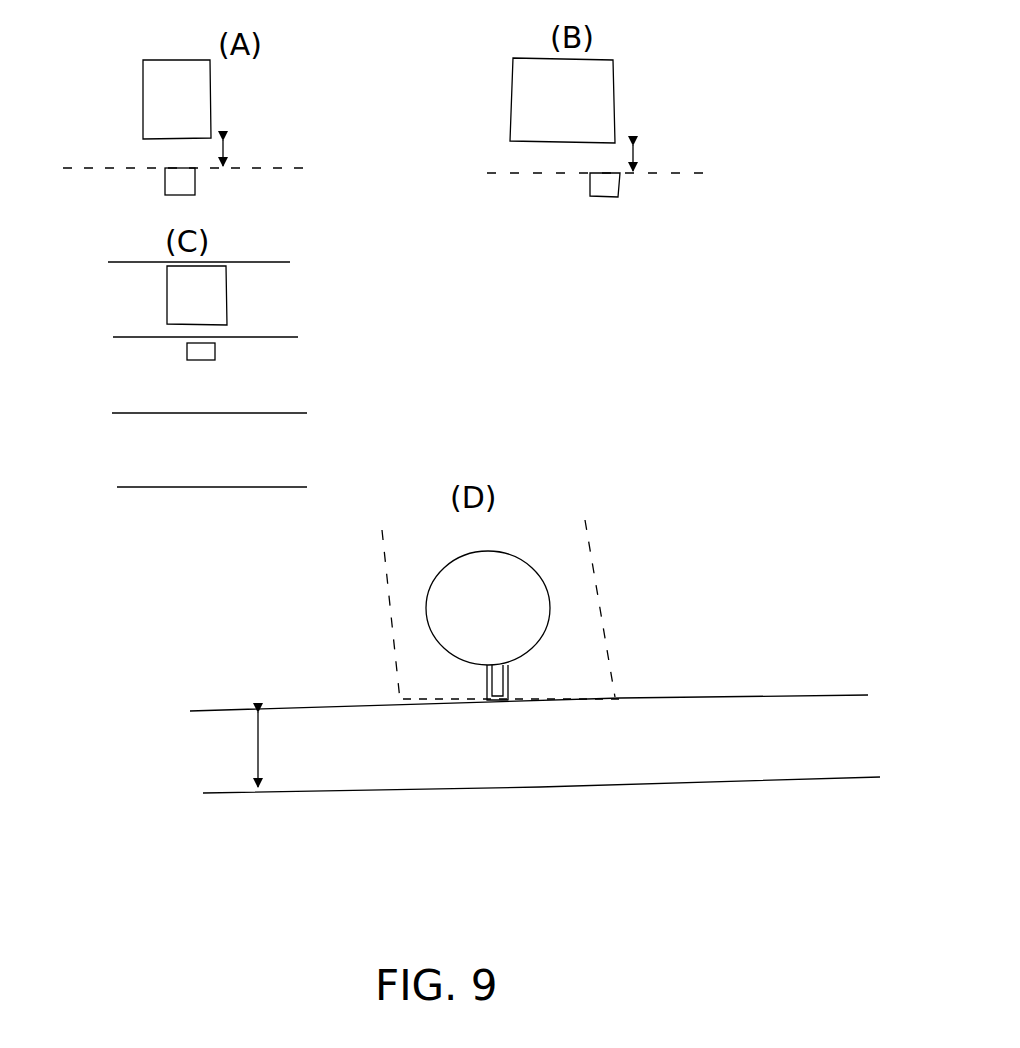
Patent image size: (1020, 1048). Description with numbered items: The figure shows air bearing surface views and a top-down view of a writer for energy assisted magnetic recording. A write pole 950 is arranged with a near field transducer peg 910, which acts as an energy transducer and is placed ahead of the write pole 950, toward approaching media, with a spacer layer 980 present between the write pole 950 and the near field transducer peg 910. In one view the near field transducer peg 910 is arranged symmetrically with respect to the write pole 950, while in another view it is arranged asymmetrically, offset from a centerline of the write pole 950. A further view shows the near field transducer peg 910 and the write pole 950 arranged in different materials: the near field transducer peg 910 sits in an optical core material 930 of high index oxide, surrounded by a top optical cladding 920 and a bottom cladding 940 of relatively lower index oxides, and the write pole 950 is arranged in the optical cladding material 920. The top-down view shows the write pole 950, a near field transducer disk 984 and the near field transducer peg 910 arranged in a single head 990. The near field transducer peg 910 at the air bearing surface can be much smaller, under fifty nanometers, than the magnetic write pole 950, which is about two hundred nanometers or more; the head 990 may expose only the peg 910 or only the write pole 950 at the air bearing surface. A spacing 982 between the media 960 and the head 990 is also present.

In FIG. 9A, the near field transducer peg 910 is at (195, 180).
In FIG. 9B, the near field transducer peg 910 is at (612, 197).
In FIG. 9C, the near field transducer peg 910 is at (215, 352).
In FIG. 9D, the near field transducer peg 910 is at (508, 680).
In FIG. 9C, the top optical cladding 920 is at (290, 295).
In FIG. 9C, the optical core material 930 is at (313, 378).
In FIG. 9C, the bottom cladding 940 is at (322, 462).
In FIG. 9A, the write pole 950 is at (211, 90).
In FIG. 9B, the write pole 950 is at (503, 77).
In FIG. 9C, the write pole 950 is at (158, 290).
In FIG. 9D, the write pole 950 is at (567, 545).
In FIG. 9D, the media 960 is at (358, 787).
In FIG. 9A, the spacer layer 980 is at (229, 153).
In FIG. 9B, the spacer layer 980 is at (636, 158).
In FIG. 9D, the spacing 982 is at (250, 743).
In FIG. 9D, the near field transducer disk 984 is at (549, 620).
In FIG. 9D, the head 990 is at (380, 580).